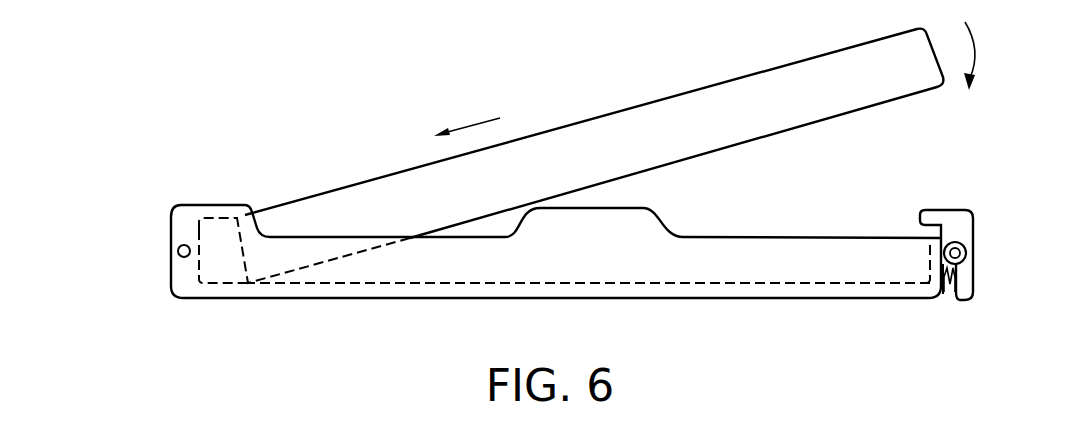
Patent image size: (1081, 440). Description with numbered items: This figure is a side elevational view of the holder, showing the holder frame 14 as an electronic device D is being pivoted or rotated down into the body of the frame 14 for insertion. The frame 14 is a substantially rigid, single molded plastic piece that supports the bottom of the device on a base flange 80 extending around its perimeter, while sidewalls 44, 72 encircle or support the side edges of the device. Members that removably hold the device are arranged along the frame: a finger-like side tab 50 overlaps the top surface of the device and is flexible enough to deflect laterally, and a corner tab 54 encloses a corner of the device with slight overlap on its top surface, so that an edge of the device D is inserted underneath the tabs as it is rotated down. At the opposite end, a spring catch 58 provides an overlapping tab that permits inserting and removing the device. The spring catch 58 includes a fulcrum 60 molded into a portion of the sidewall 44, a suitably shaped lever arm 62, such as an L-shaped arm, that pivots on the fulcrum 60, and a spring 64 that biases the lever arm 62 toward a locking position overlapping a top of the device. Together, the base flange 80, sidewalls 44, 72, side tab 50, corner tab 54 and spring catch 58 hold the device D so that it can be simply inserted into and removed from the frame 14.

The holder frame 14 is at (211, 307).
The corner tab 54 is at (198, 212).
The side tab 50 is at (633, 220).
The base flange 80 is at (774, 252).
The sidewall 72 is at (361, 286).
The sidewall 44 is at (920, 268).
The spring catch 58 is at (969, 203).
The fulcrum 60 is at (966, 243).
The lever arm 62 is at (963, 279).
The spring 64 is at (949, 294).
The electronic device D is at (400, 173).